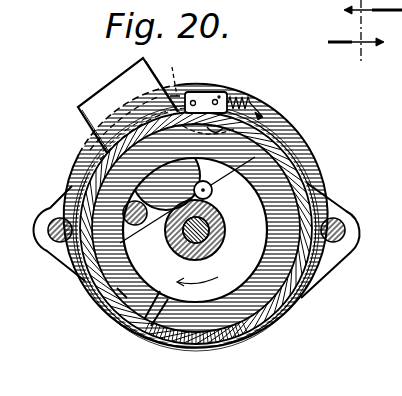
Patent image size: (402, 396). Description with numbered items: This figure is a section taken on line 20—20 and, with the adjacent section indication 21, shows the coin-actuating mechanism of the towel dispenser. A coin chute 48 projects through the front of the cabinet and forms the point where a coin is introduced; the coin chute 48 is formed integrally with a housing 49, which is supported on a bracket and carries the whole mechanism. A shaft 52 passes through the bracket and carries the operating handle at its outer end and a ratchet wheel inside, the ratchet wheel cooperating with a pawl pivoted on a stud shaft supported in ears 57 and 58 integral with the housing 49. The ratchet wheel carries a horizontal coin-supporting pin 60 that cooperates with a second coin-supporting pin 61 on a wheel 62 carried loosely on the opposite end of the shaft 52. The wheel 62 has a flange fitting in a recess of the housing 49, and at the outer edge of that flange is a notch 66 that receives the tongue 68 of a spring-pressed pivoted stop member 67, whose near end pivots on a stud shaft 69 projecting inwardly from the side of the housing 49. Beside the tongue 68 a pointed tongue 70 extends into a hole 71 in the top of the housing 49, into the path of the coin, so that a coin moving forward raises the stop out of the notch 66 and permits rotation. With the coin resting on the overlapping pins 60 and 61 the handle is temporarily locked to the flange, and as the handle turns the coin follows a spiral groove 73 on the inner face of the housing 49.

The coin chute 48 is at (103, 100).
The housing 49 is at (286, 158).
The shaft 52 is at (214, 241).
The ear 57 is at (317, 200).
The ear 58 is at (336, 236).
The coin-supporting pin 60 is at (88, 275).
The second coin-supporting pin 61 is at (255, 157).
The wheel 62 is at (236, 275).
The notch 66 is at (263, 123).
The stop member 67 is at (90, 157).
The tongue 68 is at (206, 92).
The stud shaft 69 is at (57, 232).
The pointed tongue 70 is at (200, 148).
The hole 71 is at (173, 71).
The spiral groove 73 is at (113, 308).
The section line 20— 20 is at (360, 31).
The section line 21 is at (365, 43).